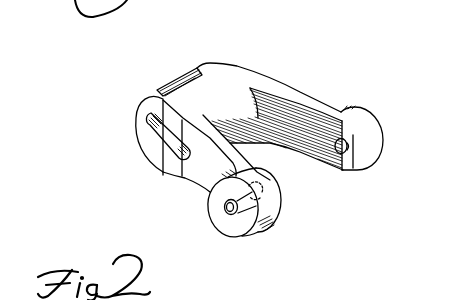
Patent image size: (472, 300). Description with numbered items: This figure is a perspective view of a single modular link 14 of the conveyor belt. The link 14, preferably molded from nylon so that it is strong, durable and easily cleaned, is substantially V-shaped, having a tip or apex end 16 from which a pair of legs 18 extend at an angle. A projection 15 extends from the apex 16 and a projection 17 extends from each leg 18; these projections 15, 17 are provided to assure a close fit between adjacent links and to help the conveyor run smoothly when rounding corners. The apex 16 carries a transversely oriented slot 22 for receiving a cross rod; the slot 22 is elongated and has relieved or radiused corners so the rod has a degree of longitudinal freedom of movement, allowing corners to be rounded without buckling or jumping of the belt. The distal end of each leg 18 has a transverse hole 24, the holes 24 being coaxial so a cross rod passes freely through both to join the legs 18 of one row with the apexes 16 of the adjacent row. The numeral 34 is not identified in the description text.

The modular link 14 is at (293, 91).
The projection 15 is at (157, 104).
The apex end 16 is at (192, 70).
The projection 17 is at (346, 171).
The leg 18 is at (193, 188).
The slot 22 is at (140, 151).
The transverse hole 24 is at (341, 140).
The stray numeral 34 is at (276, 289).